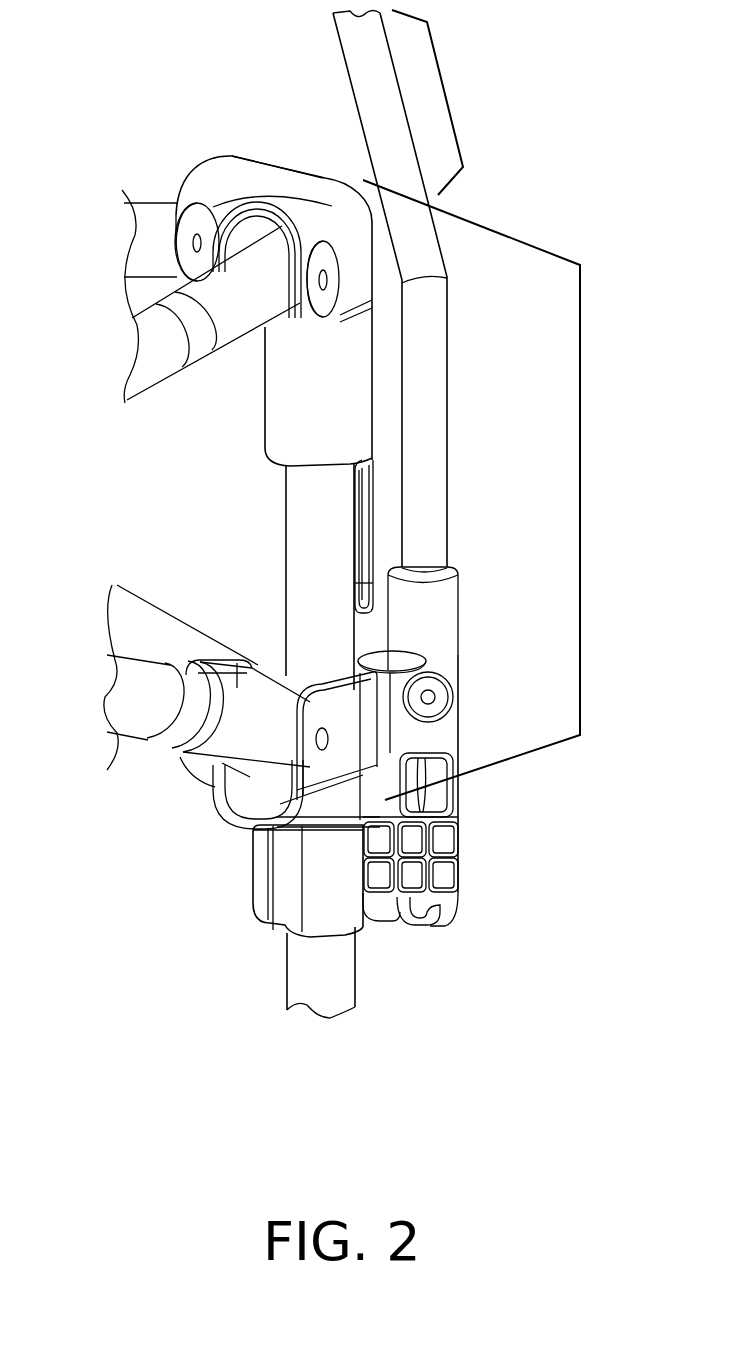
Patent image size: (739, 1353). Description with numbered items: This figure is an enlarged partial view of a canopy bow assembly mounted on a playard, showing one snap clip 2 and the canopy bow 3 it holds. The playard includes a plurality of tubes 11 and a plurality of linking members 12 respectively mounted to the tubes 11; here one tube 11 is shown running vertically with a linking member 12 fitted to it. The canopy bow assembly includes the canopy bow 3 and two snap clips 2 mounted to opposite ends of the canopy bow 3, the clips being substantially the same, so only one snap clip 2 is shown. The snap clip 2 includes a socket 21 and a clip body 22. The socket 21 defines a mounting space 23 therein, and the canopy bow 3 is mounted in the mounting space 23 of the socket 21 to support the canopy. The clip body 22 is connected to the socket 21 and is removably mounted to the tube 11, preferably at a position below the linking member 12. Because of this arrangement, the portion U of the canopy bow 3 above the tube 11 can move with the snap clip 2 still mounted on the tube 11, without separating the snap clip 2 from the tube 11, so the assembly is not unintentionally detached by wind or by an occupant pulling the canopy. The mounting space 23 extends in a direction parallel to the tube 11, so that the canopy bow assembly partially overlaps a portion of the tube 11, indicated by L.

The snap clip 2 is at (402, 792).
The canopy bow 3 is at (346, 90).
The tube 11 is at (305, 567).
The linking member 12 is at (228, 806).
The socket 21 is at (445, 653).
The clip body 22 is at (342, 907).
The mounting space 23 is at (432, 607).
The portion of the canopy bow above the tube U is at (445, 94).
The overlapping portion L is at (580, 498).